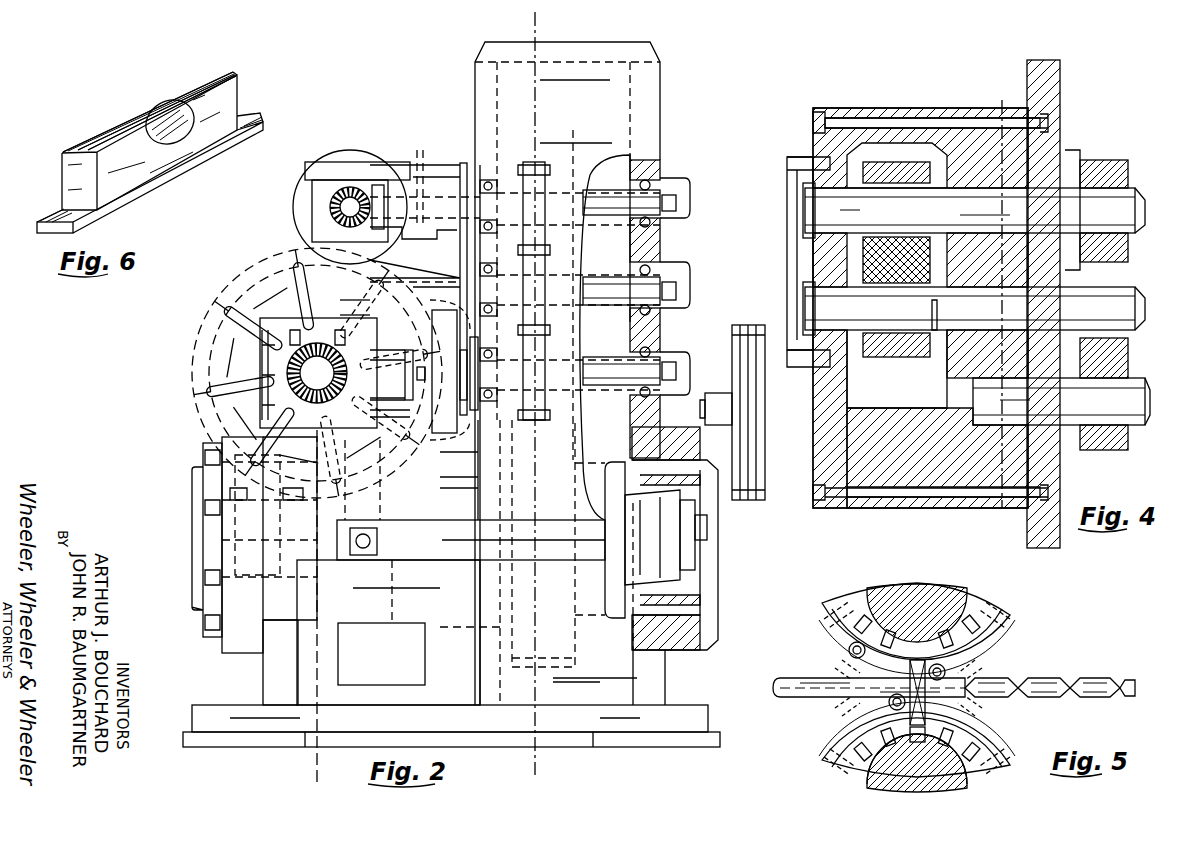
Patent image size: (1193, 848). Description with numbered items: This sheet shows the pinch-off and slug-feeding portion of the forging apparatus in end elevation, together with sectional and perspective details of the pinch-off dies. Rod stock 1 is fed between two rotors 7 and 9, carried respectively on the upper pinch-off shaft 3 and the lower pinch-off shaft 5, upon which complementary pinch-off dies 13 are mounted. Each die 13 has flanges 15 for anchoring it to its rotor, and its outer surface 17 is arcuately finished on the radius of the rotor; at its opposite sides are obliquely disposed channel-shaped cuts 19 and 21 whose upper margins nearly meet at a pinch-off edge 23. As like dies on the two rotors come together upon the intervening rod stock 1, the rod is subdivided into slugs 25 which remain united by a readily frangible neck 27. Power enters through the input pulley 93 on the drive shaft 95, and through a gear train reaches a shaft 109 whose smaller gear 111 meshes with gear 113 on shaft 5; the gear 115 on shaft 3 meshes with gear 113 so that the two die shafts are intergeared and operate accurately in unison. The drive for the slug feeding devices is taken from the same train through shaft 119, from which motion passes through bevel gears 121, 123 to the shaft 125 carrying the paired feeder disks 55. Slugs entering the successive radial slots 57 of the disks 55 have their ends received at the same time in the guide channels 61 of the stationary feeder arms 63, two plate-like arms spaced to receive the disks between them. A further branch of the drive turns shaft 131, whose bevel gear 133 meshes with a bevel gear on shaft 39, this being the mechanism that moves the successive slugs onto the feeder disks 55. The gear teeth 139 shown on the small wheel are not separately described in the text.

In FIG. 5, the rod stock 1 is at (784, 682).
In FIG. 2, the upper pinch-off shaft 3 is at (527, 22).
In FIG. 4, the upper pinch-off shaft 3 is at (1065, 195).
In FIG. 5, the upper pinch-off shaft 3 is at (948, 603).
In FIG. 4, the lower pinch-off shaft 5 is at (858, 200).
In FIG. 5, the lower pinch-off shaft 5 is at (870, 773).
In FIG. 4, the rotor 7 is at (848, 160).
In FIG. 5, the rotor 7 is at (975, 610).
In FIG. 4, the lower pinch-off die rotor 9 is at (936, 357).
In FIG. 5, the lower pinch-off die rotor 9 is at (985, 722).
In FIG. 6, the pinch-off dies 13 is at (227, 92).
In FIG. 4, the pinch-off dies 13 is at (915, 165).
In FIG. 5, the pinch-off dies 13 is at (850, 665).
In FIG. 6, the flanges 15 is at (53, 213).
In FIG. 2, the flanges 15 is at (308, 772).
In FIG. 6, the outer surface 17 is at (104, 130).
In FIG. 6, the channel-shaped cut 19 is at (143, 113).
In FIG. 6, the channel-shaped cut 21 is at (174, 97).
In FIG. 6, the pinch-off edge 23 is at (153, 135).
In FIG. 5, the pinch-off edge 23 is at (1000, 638).
In FIG. 5, the slugs 25 is at (1005, 678).
In FIG. 5, the frangible neck 27 is at (1075, 678).
In FIG. 2, the shaft 39 is at (340, 180).
In FIG. 2, the feeder disks 55 is at (215, 322).
In FIG. 2, the radial slots 57 is at (283, 262).
In FIG. 2, the guide channels 61 is at (355, 286).
In FIG. 2, the stationary feeder arms 63 is at (355, 303).
In FIG. 2, the power input pulley 93 is at (742, 325).
In FIG. 2, the drive shaft 95 is at (714, 393).
In FIG. 4, the shaft 109 is at (1138, 428).
In FIG. 4, the gear 111 is at (1108, 450).
In FIG. 4, the gear 113 is at (1128, 345).
In FIG. 4, the gear 115 is at (1130, 172).
In FIG. 2, the shaft 119 is at (440, 340).
In FIG. 2, the bevel gear 121 is at (344, 340).
In FIG. 2, the bevel gear 123 is at (297, 340).
In FIG. 2, the shaft 125 is at (300, 376).
In FIG. 2, the shaft 131 is at (615, 200).
In FIG. 2, the bevel gear 133 is at (378, 192).
In FIG. 2, the gear 139 is at (353, 190).